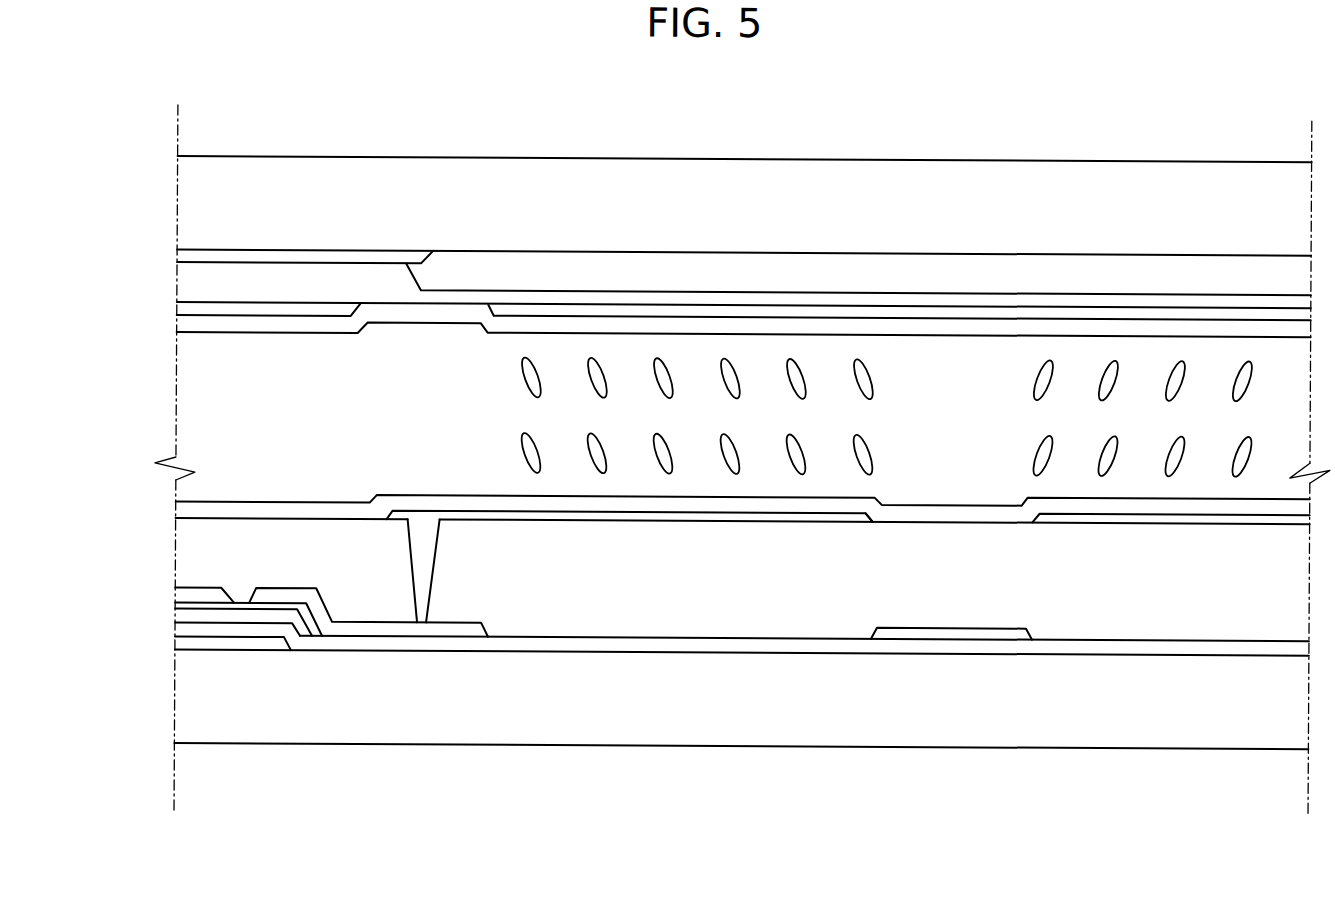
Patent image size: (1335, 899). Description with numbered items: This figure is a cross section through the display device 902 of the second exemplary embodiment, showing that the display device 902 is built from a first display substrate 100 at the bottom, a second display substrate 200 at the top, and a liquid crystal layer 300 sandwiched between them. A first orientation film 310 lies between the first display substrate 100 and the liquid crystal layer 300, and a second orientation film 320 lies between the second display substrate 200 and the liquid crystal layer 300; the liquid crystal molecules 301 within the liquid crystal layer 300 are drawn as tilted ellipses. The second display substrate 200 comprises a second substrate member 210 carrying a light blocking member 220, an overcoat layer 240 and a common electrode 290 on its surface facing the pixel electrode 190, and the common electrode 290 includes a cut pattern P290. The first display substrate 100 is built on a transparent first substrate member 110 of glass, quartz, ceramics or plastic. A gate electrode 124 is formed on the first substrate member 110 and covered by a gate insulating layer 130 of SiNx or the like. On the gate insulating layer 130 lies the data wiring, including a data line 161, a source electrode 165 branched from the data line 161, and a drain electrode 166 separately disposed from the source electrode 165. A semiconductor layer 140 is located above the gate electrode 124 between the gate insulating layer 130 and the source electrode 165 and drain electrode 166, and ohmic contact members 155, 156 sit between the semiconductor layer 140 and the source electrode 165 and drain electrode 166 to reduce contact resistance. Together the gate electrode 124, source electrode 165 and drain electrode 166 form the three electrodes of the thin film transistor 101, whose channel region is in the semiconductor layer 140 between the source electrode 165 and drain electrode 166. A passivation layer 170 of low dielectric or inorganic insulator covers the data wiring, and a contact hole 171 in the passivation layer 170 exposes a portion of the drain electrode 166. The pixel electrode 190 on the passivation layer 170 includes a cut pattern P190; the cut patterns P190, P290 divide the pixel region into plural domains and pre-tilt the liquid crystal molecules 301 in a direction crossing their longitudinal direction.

The display device 902 is at (810, 81).
The first display substrate 100 is at (1249, 755).
The second display substrate 200 is at (263, 148).
The liquid crystal layer 300 is at (169, 417).
The liquid crystal molecules 301 is at (1040, 378).
The second substrate member 210 is at (487, 176).
The light blocking member 220 is at (381, 257).
The overcoat layer 240 is at (316, 287).
The common electrode 290 is at (654, 313).
The cut pattern P290 is at (489, 304).
The second orientation film 320 is at (188, 323).
The first orientation film 310 is at (188, 509).
The pixel electrode 190 is at (645, 512).
The cut pattern P190 is at (876, 514).
The passivation layer 170 is at (747, 607).
The contact hole 171 is at (423, 589).
The data line 161 is at (987, 630).
The gate insulating layer 130 is at (537, 640).
The first substrate member 110 is at (1141, 715).
The thin film transistor 101 is at (408, 845).
The gate electrode 124 is at (245, 639).
The semiconductor layer 140 is at (260, 616).
The ohmic contact member 155 is at (215, 606).
The ohmic contact member 156 is at (296, 619).
The source electrode 165 is at (200, 594).
The drain electrode 166 is at (352, 629).